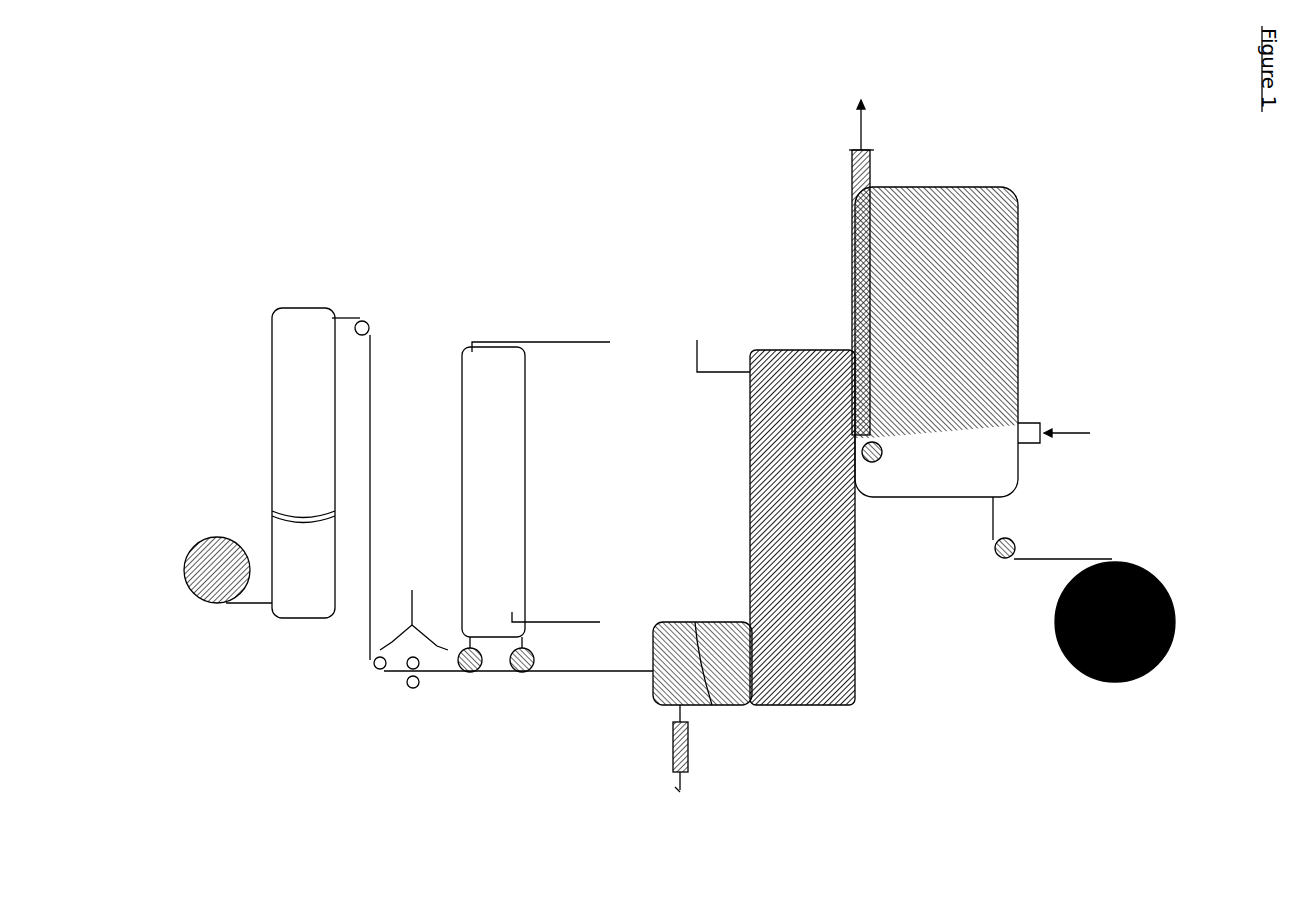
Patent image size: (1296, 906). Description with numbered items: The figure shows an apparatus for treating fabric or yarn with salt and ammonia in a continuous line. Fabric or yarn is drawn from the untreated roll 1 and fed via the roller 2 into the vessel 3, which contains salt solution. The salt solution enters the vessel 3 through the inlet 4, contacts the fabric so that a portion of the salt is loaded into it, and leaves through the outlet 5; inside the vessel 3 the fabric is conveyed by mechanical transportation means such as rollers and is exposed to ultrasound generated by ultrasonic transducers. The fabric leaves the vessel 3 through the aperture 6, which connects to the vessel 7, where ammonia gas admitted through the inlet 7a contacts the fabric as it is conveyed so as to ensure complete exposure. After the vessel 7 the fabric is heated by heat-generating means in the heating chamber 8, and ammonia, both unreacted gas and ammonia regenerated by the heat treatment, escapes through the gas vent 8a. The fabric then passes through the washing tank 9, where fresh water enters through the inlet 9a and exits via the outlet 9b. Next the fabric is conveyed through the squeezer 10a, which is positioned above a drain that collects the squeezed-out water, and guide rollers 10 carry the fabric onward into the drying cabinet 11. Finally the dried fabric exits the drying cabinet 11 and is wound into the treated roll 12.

The untreated roll 1 is at (1118, 627).
The roller 2 is at (1052, 528).
The vessel 3 is at (936, 342).
The inlet 4 is at (1054, 445).
The outlet 5 is at (854, 267).
The aperture 6 is at (872, 464).
The vessel 7 is at (802, 527).
The inlet 7a is at (723, 370).
The heating chamber 8 is at (702, 663).
The gas vent 8a is at (664, 748).
The washing tank 9 is at (496, 509).
The inlet 9a is at (568, 620).
The outlet 9b is at (541, 338).
The guide rollers 10 is at (511, 511).
The squeezer 10a is at (410, 698).
The drying cabinet 11 is at (320, 463).
The treated roll 12 is at (214, 570).